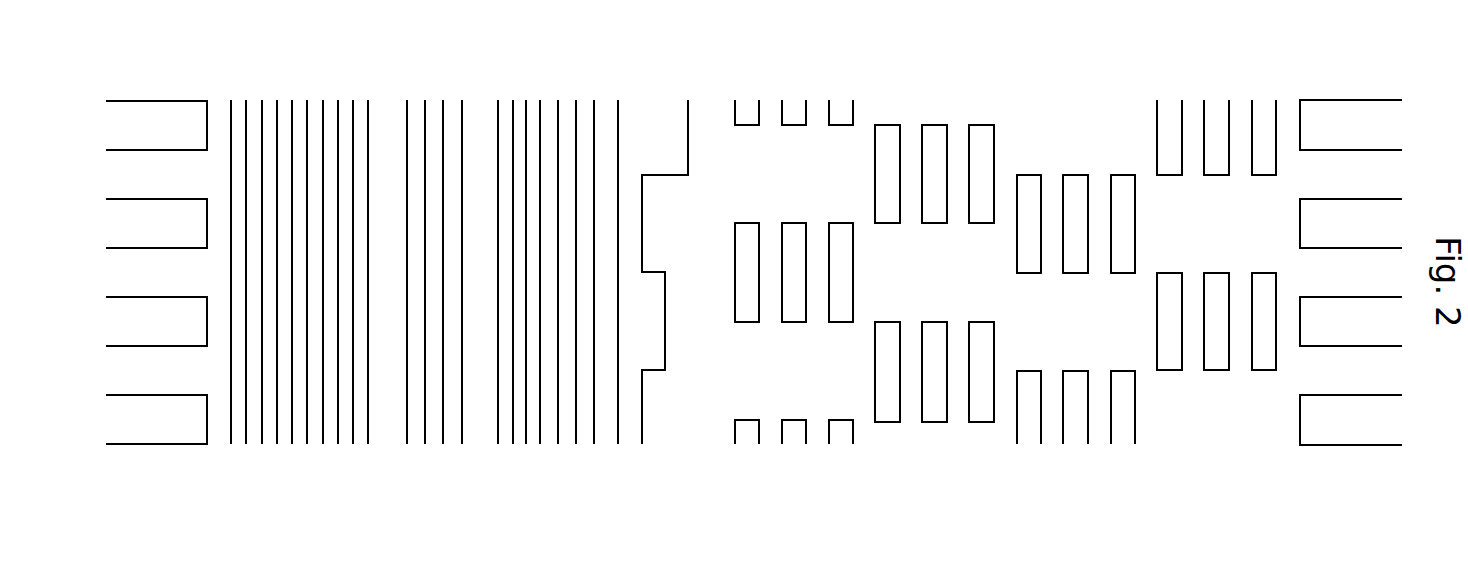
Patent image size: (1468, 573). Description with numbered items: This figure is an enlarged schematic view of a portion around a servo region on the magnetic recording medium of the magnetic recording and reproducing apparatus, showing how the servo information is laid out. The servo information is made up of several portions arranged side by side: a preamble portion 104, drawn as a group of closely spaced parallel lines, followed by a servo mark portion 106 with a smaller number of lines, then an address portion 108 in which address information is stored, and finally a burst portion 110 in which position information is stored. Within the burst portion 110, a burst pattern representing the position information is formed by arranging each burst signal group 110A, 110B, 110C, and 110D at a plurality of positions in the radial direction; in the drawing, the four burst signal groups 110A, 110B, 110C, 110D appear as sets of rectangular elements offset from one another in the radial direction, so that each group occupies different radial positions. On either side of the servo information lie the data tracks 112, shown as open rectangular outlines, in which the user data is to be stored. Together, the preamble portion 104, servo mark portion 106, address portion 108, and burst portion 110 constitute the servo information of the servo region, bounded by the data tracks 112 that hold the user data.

The preamble portion 104 is at (370, 93).
The servo mark portion 106 is at (465, 93).
The address portion 108 is at (690, 93).
The burst portion 110 is at (1278, 93).
The burst signal group 110A is at (1155, 449).
The burst signal group 110B is at (1012, 449).
The burst signal group 110C is at (872, 449).
The burst signal group 110D is at (730, 449).
The data tracks 112 is at (106, 93).